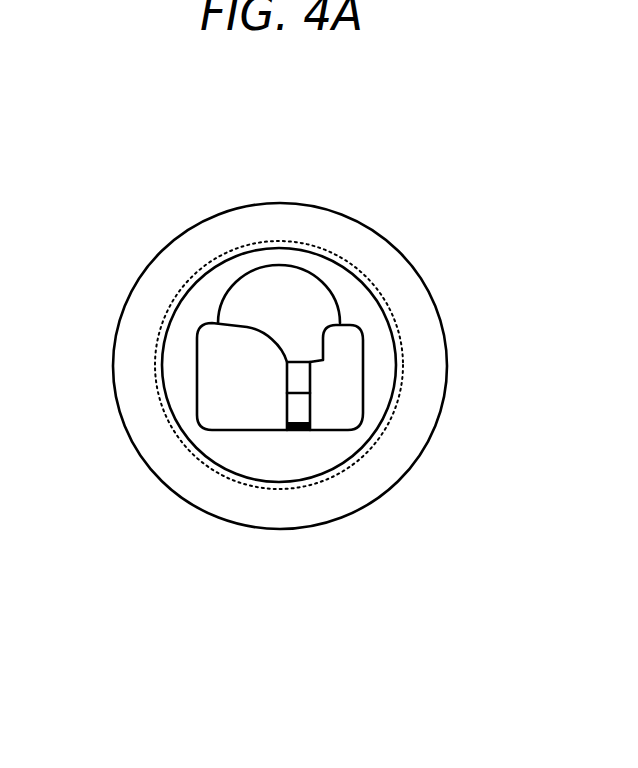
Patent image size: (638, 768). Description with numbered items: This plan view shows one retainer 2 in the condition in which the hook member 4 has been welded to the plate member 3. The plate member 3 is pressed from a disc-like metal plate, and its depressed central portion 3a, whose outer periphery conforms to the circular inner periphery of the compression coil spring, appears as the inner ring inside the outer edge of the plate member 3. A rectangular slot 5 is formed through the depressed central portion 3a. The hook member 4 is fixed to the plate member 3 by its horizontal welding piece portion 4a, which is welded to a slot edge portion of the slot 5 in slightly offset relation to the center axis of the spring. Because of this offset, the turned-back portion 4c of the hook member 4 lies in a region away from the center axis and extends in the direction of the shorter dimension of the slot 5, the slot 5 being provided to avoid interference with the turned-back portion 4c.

The retainer 2 is at (138, 254).
The plate member 3 is at (432, 304).
The depressed central portion 3a is at (358, 370).
The hook member 4 is at (315, 255).
The welding piece portion 4a is at (274, 240).
The turned-back portion 4c is at (333, 514).
The slot 5 is at (222, 379).